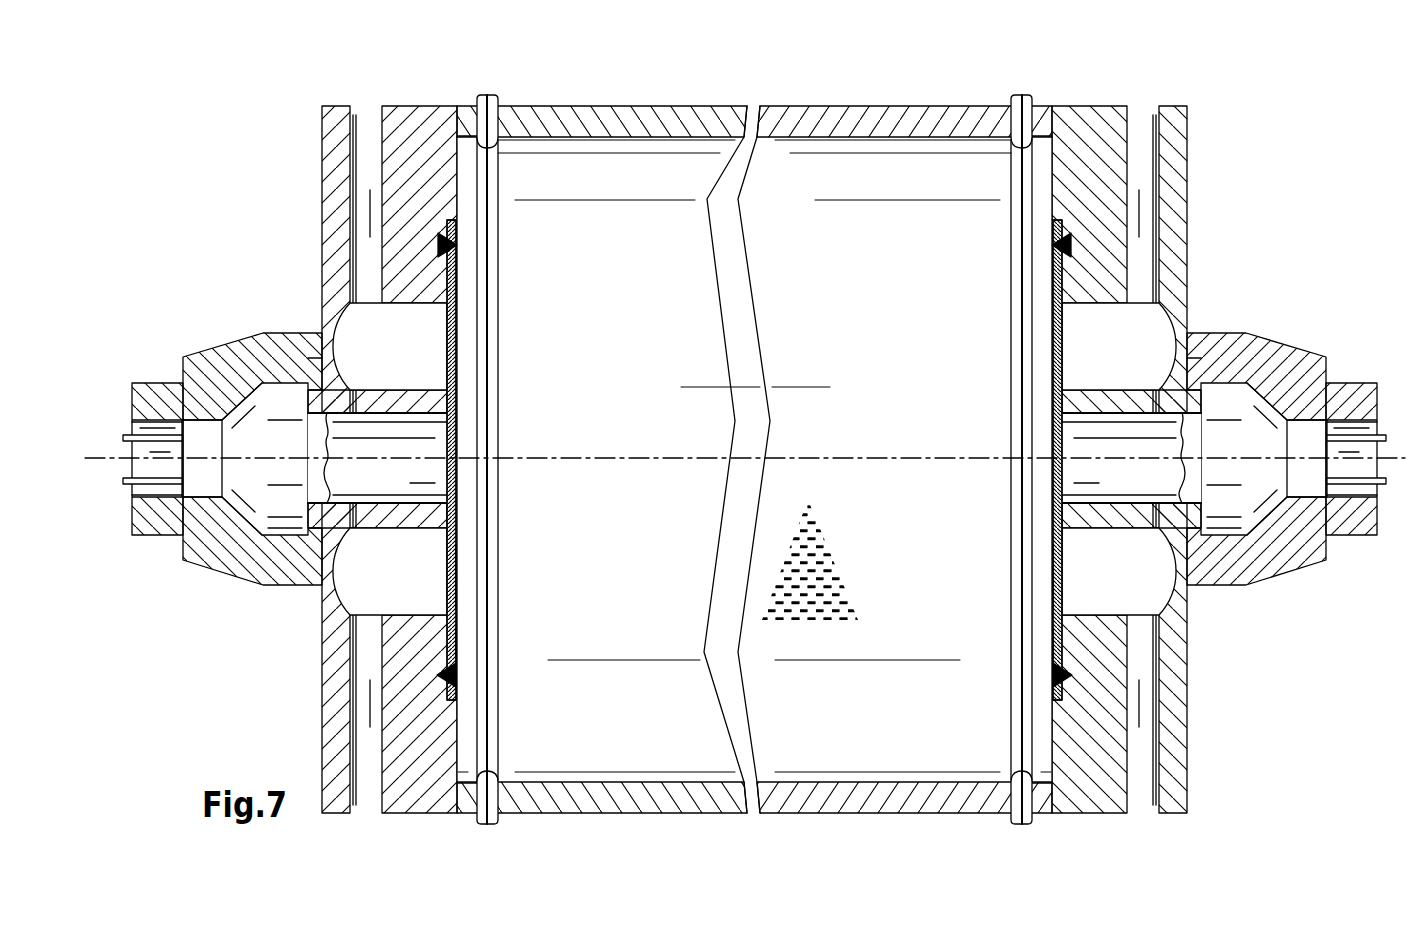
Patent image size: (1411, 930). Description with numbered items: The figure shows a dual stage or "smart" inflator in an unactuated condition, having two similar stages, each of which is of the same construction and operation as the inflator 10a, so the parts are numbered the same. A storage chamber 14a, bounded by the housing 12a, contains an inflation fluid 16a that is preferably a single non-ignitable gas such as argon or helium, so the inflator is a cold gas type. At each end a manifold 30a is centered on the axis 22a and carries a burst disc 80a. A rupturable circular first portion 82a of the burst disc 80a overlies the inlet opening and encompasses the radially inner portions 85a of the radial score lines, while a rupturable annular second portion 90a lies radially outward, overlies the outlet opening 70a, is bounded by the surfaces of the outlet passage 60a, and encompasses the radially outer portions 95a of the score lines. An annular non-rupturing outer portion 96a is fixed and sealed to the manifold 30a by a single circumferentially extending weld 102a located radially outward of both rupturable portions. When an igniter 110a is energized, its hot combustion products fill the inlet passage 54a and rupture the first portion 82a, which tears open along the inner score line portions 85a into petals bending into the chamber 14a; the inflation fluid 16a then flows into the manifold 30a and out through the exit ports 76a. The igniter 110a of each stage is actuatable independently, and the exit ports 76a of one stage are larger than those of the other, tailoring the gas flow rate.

The inflator 10a is at (581, 95).
The tubular shell 12a is at (676, 95).
The chamber 14a is at (833, 314).
The inflation fluid 16a is at (822, 556).
The axis 22a is at (107, 457).
The manifold 30a is at (408, 105).
The inlet passage 54a is at (393, 491).
The outlet passage 60a is at (355, 348).
The outlet opening 70a is at (456, 592).
The exit ports 76a is at (370, 135).
The burst disc 80a is at (459, 275).
The first portion 82a is at (456, 425).
The radially inner portions 85a is at (456, 560).
The second portion 90a is at (461, 324).
The radially outer portions 95a is at (456, 358).
The non-rupturing outer portion 96a is at (456, 642).
The weld 102a is at (457, 675).
The igniter 110a is at (221, 499).